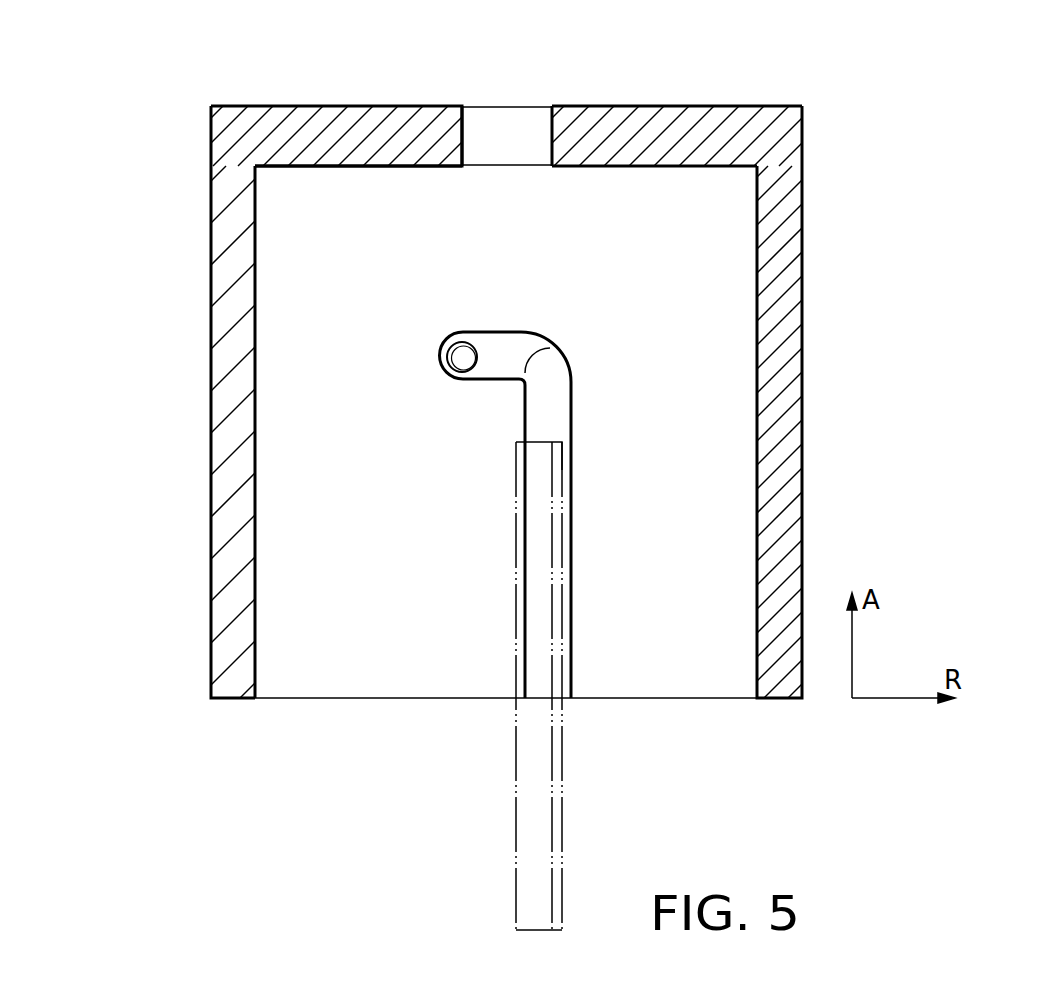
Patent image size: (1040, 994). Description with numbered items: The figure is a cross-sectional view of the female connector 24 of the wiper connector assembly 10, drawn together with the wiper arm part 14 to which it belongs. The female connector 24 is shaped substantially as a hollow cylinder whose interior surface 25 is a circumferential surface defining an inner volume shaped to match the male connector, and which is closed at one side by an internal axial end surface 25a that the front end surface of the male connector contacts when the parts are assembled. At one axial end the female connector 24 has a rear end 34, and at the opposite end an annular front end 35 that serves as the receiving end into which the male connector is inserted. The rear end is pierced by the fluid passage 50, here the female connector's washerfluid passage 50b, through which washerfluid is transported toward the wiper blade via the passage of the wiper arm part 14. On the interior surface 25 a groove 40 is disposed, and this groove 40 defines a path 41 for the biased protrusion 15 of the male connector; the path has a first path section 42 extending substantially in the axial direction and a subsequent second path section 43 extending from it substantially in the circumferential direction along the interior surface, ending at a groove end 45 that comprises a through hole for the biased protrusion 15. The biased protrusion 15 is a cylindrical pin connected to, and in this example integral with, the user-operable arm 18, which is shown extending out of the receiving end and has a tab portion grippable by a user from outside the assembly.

The wiper connector assembly 10 is at (912, 83).
The wiper arm part 14 is at (803, 268).
The female connector 24 is at (486, 401).
The rear end 34 is at (333, 106).
The front end 35 is at (223, 700).
The fluid passage 50 is at (512, 140).
The washerfluid passage 50b is at (507, 136).
The interior surface 25 is at (348, 436).
The internal axial end surface 25a is at (340, 193).
The groove 40 is at (557, 423).
The path 41 is at (507, 488).
The second path section 43 is at (503, 352).
The first path section 42 is at (540, 410).
The groove end 45 is at (462, 357).
The biased protrusion 15 is at (563, 470).
The user-operable arm 18 is at (535, 834).